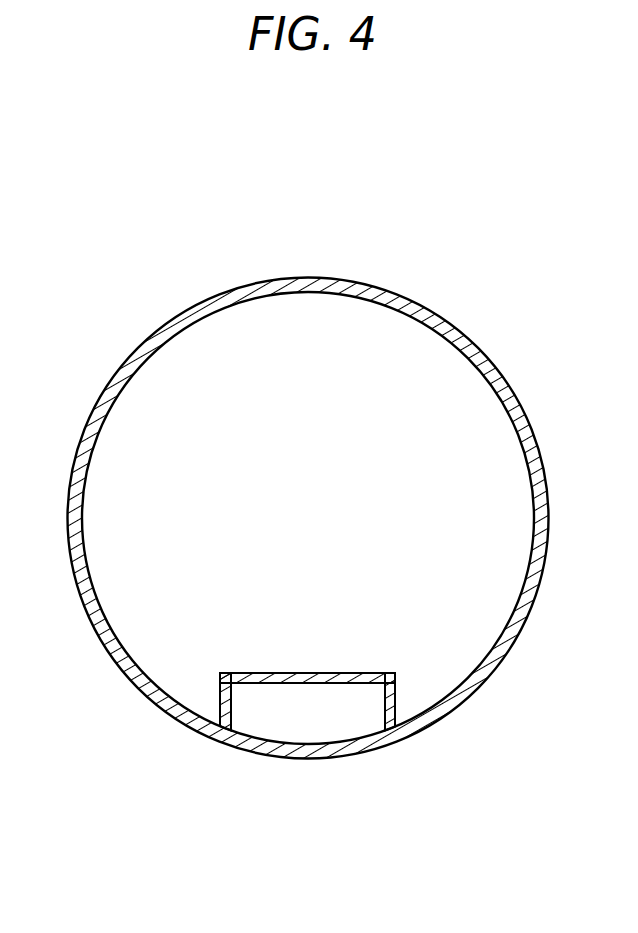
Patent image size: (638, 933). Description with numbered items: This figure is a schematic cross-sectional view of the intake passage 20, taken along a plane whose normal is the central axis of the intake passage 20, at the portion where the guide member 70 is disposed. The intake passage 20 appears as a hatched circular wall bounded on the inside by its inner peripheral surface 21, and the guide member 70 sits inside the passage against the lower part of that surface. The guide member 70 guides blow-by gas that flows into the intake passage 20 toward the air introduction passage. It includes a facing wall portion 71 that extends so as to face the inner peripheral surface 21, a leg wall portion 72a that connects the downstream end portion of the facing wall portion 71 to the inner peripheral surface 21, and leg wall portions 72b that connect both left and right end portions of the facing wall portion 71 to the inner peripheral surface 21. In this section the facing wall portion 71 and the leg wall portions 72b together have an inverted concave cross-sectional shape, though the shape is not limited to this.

The intake passage 20 is at (125, 362).
The inner peripheral surface 21 is at (112, 630).
The guide member 70 is at (305, 691).
The facing wall portion 71 is at (307, 673).
The leg wall portion 72a is at (328, 714).
The leg wall portion 72b is at (220, 700).